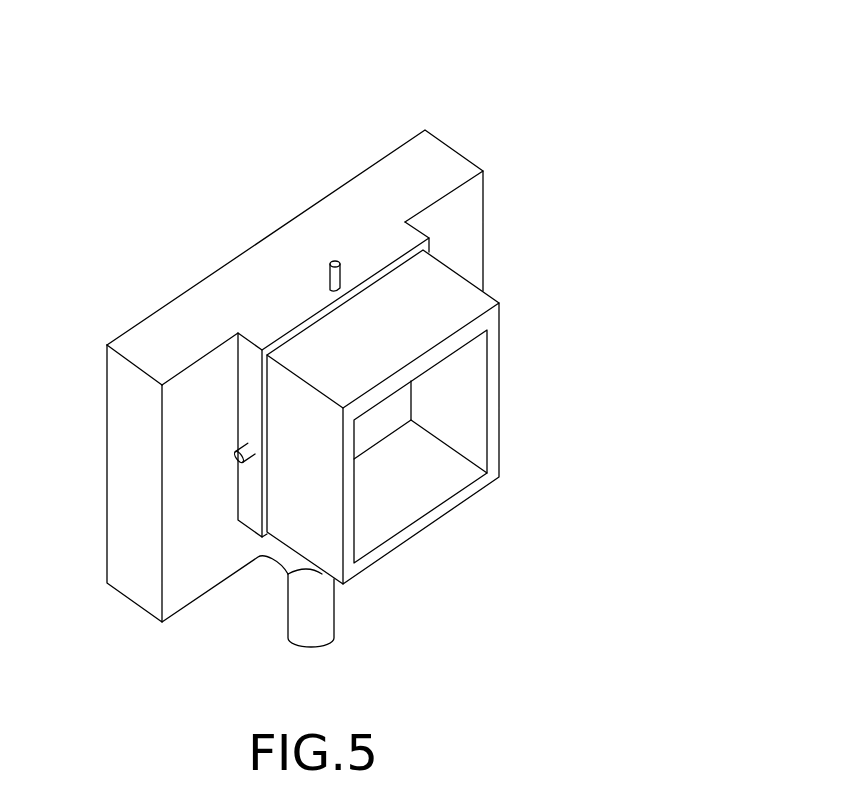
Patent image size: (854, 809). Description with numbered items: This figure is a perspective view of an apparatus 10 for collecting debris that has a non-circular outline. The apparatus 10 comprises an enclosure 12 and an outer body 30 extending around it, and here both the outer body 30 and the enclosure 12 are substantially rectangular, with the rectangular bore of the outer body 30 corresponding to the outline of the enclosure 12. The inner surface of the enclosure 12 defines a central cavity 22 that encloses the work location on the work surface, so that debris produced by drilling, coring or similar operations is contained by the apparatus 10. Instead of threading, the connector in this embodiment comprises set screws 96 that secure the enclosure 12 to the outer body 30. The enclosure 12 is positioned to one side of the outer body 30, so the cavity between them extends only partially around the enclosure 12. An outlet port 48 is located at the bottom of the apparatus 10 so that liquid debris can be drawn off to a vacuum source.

The apparatus for collecting debris 10 is at (437, 90).
The enclosure 12 is at (499, 376).
The central cavity 22 is at (428, 503).
The outer body 30 is at (468, 242).
The outlet port 48 is at (335, 607).
The set screws 96 is at (341, 268).